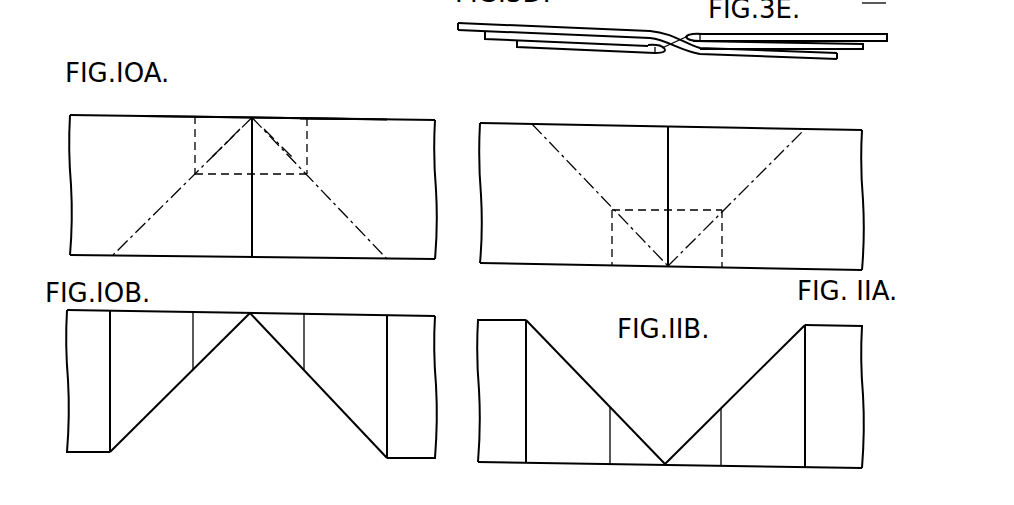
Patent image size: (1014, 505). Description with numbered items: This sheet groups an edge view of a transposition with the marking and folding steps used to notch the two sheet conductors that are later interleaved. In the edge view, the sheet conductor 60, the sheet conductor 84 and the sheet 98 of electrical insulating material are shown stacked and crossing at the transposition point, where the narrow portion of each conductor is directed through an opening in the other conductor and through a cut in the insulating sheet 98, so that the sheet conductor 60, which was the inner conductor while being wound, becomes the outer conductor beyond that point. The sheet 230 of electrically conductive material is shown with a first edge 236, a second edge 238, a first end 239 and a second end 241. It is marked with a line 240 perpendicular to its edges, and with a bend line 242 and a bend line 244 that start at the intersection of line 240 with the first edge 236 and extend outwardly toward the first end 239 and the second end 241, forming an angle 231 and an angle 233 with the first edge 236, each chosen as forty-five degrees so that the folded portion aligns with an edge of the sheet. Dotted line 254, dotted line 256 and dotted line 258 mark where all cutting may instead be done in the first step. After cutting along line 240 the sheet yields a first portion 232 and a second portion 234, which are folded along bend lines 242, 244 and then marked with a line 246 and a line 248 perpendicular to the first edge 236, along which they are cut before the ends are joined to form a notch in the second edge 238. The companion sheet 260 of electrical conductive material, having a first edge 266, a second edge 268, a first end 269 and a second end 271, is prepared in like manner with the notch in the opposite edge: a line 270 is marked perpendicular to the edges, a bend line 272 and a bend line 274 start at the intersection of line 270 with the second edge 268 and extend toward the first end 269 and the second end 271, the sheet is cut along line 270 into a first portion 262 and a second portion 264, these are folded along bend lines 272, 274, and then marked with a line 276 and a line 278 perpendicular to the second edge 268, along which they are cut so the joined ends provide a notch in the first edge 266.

In FIG. 3E, the sheet conductor 60 is at (652, 20).
In FIG. 3E, the sheet conductor 84 is at (583, 50).
In FIG. 3E, the sheet of electrical insulating material 98 is at (507, 38).
In FIG. 10A, the sheet of electrically conductive material 230 is at (141, 115).
In FIG. 10A, the angle 231 is at (224, 140).
In FIG. 10A, the first portion 232 is at (202, 110).
In FIG. 10B, the first portion 232 is at (82, 370).
In FIG. 10A, the angle 233 is at (281, 139).
In FIG. 10A, the second portion 234 is at (422, 110).
In FIG. 10B, the second portion 234 is at (354, 414).
In FIG. 10A, the first edge 236 is at (325, 118).
In FIG. 10B, the first edge 236 is at (376, 316).
In FIG. 10A, the second edge 238 is at (311, 260).
In FIG. 10A, the first end 239 is at (70, 205).
In FIG. 10A, the line 240 is at (253, 218).
In FIG. 10A, the second end 241 is at (437, 133).
In FIG. 10A, the bend line 242 is at (154, 218).
In FIG. 10A, the bend line 244 is at (350, 218).
In FIG. 10B, the line 246 is at (193, 348).
In FIG. 10B, the line 248 is at (304, 356).
In FIG. 10A, the dotted line 254 is at (194, 160).
In FIG. 10A, the dotted line 256 is at (232, 178).
In FIG. 10A, the dotted line 258 is at (308, 157).
In FIG. 11A, the sheet of electrical conductive material 260 is at (609, 117).
In FIG. 11A, the first portion 262 is at (679, 117).
In FIG. 11B, the first portion 262 is at (608, 361).
In FIG. 11A, the second portion 264 is at (819, 118).
In FIG. 11B, the second portion 264 is at (782, 350).
In FIG. 11A, the first edge 266 is at (703, 126).
In FIG. 11A, the second edge 268 is at (681, 267).
In FIG. 11B, the second edge 268 is at (706, 468).
In FIG. 11A, the first end 269 is at (480, 228).
In FIG. 11A, the line 270 is at (669, 180).
In FIG. 11A, the second end 271 is at (877, 194).
In FIG. 11A, the bend line 272 is at (578, 172).
In FIG. 11A, the bend line 274 is at (772, 167).
In FIG. 11B, the line 276 is at (609, 397).
In FIG. 11B, the line 278 is at (722, 398).